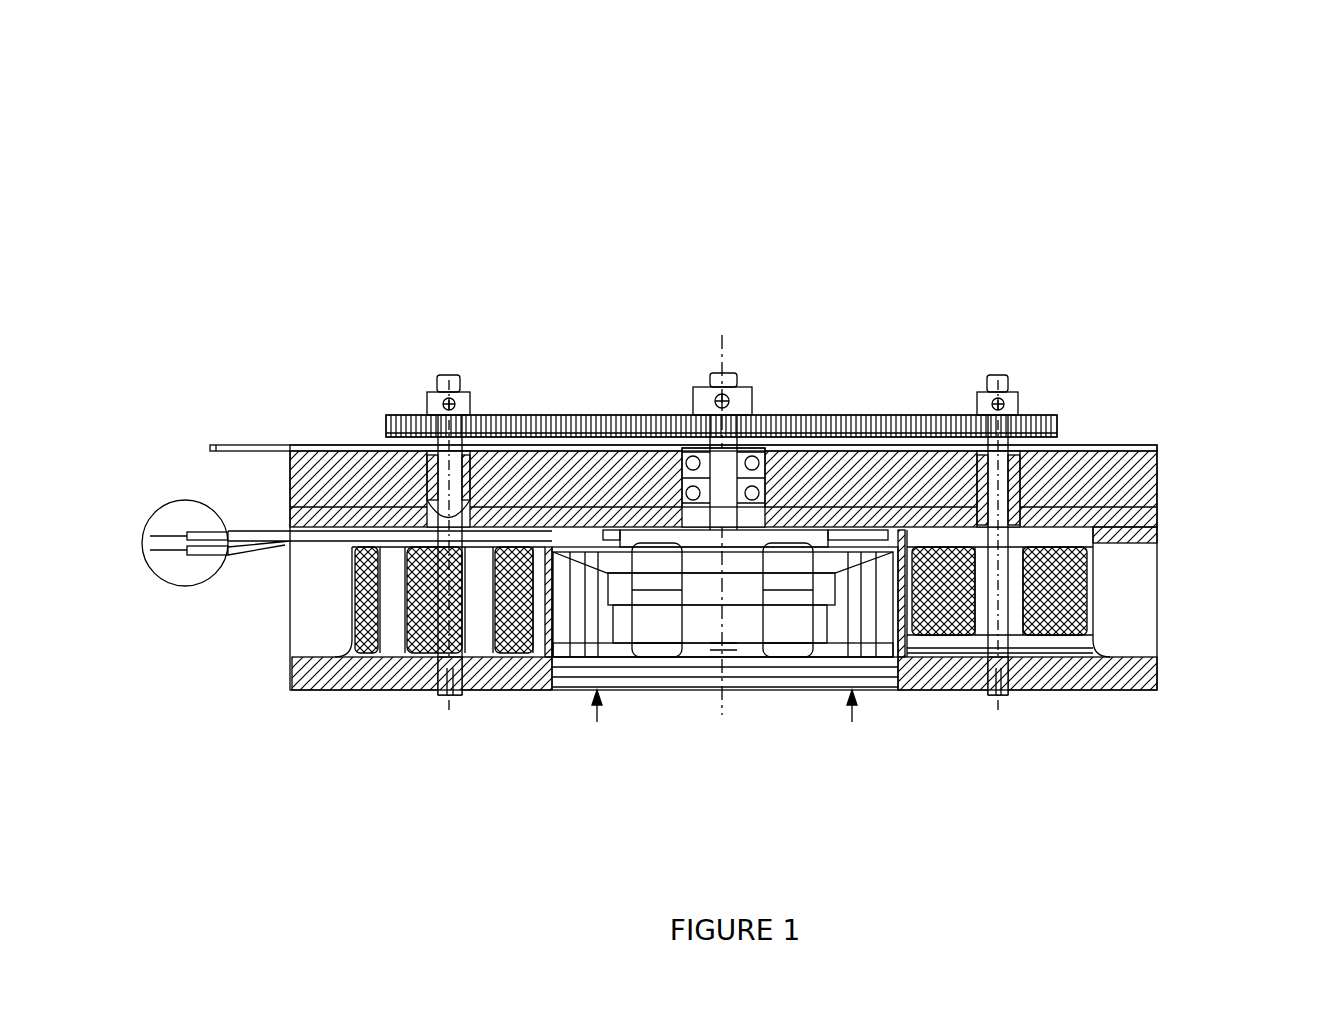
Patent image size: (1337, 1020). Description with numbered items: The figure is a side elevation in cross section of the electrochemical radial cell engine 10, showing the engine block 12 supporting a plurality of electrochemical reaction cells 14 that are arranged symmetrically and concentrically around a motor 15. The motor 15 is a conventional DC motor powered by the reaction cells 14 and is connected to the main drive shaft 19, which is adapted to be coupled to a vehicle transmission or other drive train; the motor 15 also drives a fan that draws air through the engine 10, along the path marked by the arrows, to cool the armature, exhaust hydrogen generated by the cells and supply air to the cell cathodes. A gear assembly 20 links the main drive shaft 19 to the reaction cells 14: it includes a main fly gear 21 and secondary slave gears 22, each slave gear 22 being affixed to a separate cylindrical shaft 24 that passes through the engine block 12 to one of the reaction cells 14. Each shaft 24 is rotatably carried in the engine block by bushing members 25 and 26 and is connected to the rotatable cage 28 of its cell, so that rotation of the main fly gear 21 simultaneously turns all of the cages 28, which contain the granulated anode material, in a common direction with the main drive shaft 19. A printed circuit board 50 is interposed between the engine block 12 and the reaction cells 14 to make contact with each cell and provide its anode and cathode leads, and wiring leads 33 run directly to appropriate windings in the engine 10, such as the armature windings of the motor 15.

The electrochemical radial cell engine 10 is at (542, 302).
The engine block 12 is at (1152, 478).
The electrochemical reaction cells 14 is at (393, 588).
The motor 15 is at (740, 617).
The main drive shaft 19 is at (725, 375).
The gear assembly 20 is at (640, 398).
The main fly gear 21 is at (838, 415).
The secondary slave gears 22 is at (390, 415).
The cylindrical shaft 24 is at (449, 375).
The bushing member 25 is at (427, 477).
The bushing member 26 is at (427, 657).
The rotatable cage 28 is at (410, 638).
The wiring leads 33 is at (165, 502).
The printed circuit board 50 is at (210, 446).